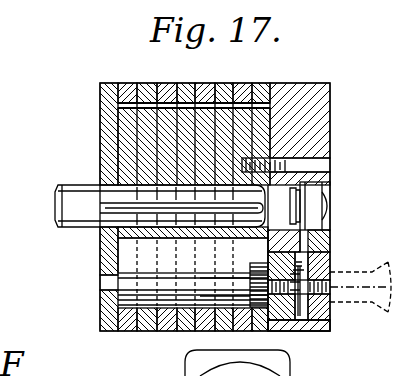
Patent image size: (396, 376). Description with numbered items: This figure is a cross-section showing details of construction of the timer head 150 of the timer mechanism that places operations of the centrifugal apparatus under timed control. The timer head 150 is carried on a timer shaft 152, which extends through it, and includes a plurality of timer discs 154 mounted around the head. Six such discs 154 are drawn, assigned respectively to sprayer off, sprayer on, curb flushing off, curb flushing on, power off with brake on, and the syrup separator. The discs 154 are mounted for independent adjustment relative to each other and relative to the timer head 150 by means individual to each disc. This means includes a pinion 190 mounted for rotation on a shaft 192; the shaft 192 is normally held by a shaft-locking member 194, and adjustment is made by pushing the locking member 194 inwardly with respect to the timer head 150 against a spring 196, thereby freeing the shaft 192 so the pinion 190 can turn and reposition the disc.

The timer head 150 is at (313, 103).
The timer shaft 152 is at (70, 210).
The timer discs 154 is at (312, 68).
The pinion 190 is at (283, 333).
The shaft 192 is at (330, 272).
The shaft-locking member 194 is at (330, 243).
The spring 196 is at (290, 273).